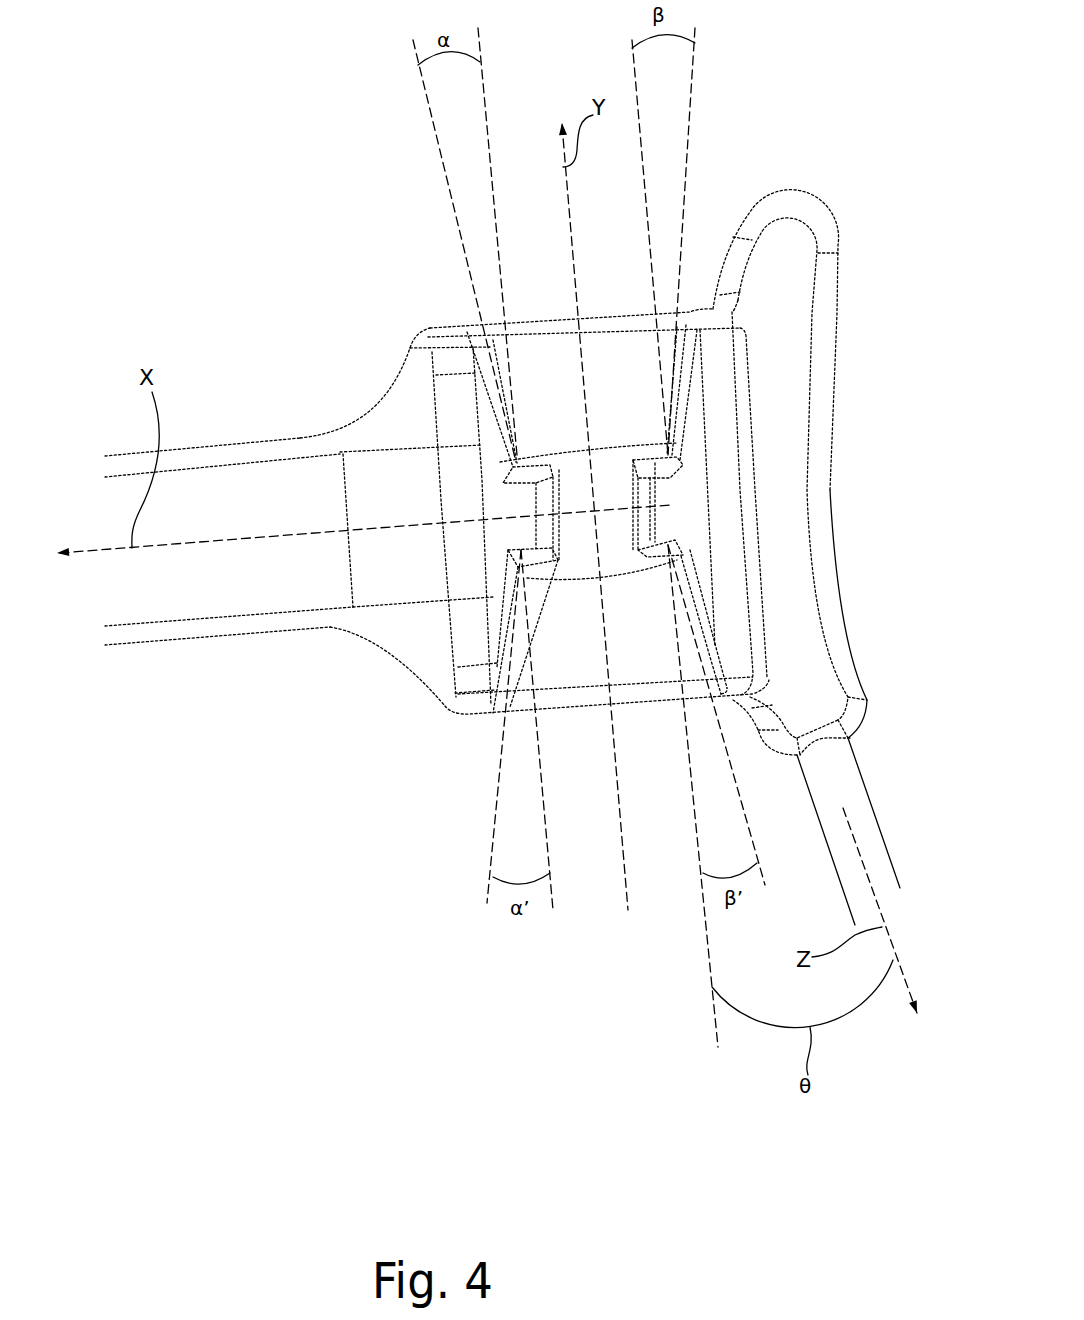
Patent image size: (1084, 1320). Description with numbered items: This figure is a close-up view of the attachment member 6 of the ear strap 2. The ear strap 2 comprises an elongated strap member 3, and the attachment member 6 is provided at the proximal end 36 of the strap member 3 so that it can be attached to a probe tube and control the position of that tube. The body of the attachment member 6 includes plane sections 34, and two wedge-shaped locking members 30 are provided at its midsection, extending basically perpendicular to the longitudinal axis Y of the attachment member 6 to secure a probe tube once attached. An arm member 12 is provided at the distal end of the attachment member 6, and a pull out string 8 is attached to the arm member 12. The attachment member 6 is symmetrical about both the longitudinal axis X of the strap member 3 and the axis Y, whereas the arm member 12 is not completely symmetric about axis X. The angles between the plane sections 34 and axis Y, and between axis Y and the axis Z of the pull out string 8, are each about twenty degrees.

The ear strap 2 is at (275, 185).
The strap member 3 is at (132, 612).
The attachment member 6 is at (383, 292).
The pull out string 8 is at (825, 793).
The arm member 12 is at (800, 250).
The locking members 30 is at (640, 487).
The plane sections 34 is at (510, 653).
The proximal end 36 is at (203, 660).